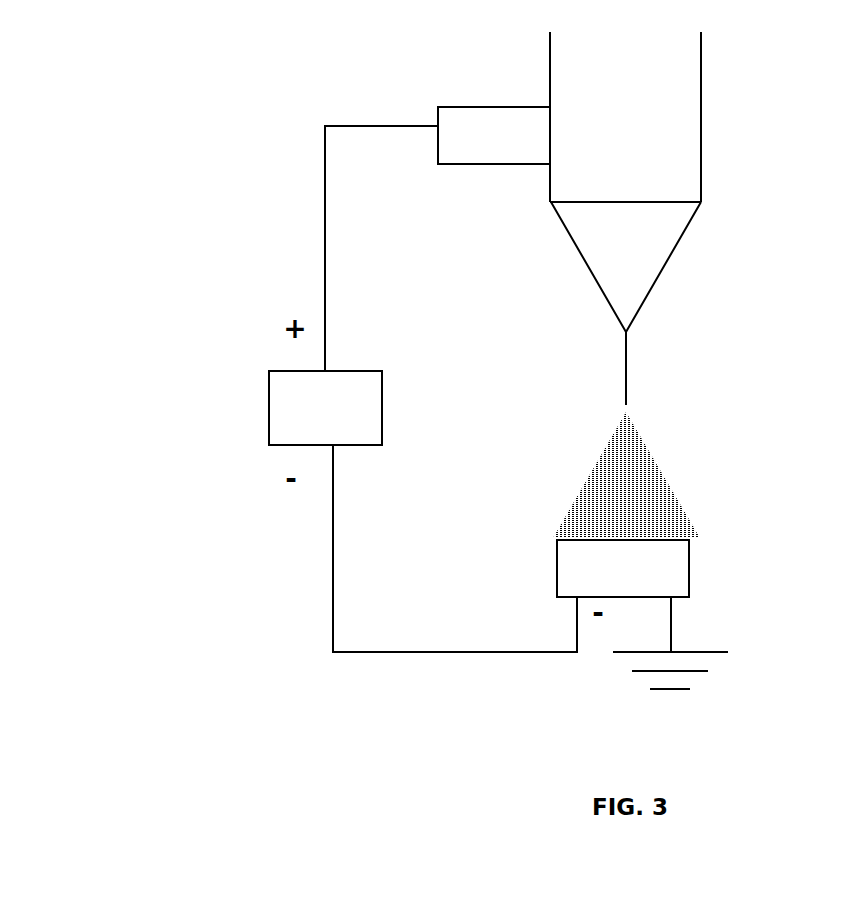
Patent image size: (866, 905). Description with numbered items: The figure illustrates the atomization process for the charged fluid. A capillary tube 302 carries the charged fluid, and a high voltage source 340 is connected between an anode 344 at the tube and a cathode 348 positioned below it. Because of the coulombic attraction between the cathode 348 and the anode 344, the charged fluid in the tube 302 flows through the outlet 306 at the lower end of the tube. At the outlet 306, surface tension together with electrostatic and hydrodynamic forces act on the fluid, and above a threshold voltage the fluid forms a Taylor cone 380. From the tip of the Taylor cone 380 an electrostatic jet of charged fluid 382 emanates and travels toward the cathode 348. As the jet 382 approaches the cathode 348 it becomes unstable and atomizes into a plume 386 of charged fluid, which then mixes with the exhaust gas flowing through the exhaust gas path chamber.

The capillary tube 302 is at (701, 52).
The outlet 306 is at (627, 202).
The Taylor cone 380 is at (646, 296).
The electrostatic jet of charged fluid 382 is at (626, 370).
The plume of charged fluid 386 is at (663, 483).
The cathode 348 is at (690, 576).
The anode 344 is at (493, 106).
The high voltage power supply 340 is at (269, 407).